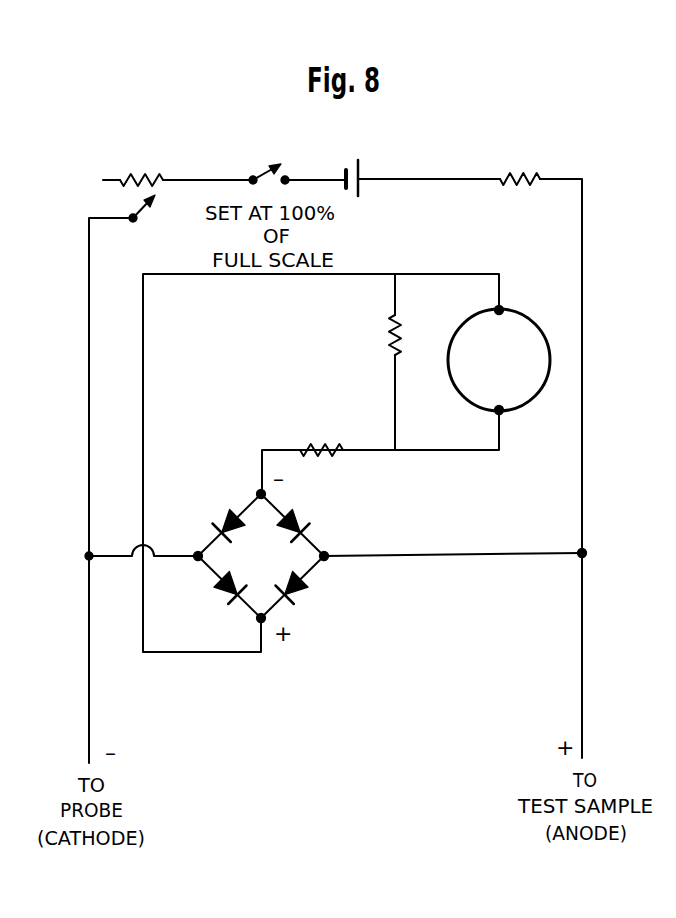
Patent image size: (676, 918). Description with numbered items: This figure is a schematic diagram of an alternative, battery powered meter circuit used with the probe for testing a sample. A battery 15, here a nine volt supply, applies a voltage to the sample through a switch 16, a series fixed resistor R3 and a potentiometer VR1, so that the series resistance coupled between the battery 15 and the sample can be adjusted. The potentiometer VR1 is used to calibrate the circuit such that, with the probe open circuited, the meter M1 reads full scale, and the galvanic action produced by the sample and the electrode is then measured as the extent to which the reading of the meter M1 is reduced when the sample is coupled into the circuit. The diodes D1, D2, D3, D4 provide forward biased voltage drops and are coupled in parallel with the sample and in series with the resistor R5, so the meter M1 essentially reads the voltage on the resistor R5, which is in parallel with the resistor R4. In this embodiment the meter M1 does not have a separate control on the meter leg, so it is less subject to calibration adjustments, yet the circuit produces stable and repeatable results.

The battery 15 is at (350, 165).
The switch 16 is at (270, 163).
The potentiometer VR1 is at (130, 184).
The series fixed resistor R3 is at (509, 184).
The resistor R4 is at (327, 457).
The resistor R5 is at (389, 327).
The meter M1 is at (535, 385).
The diode D1 is at (212, 520).
The diode D2 is at (310, 598).
The diode D3 is at (214, 598).
The diode D4 is at (310, 520).